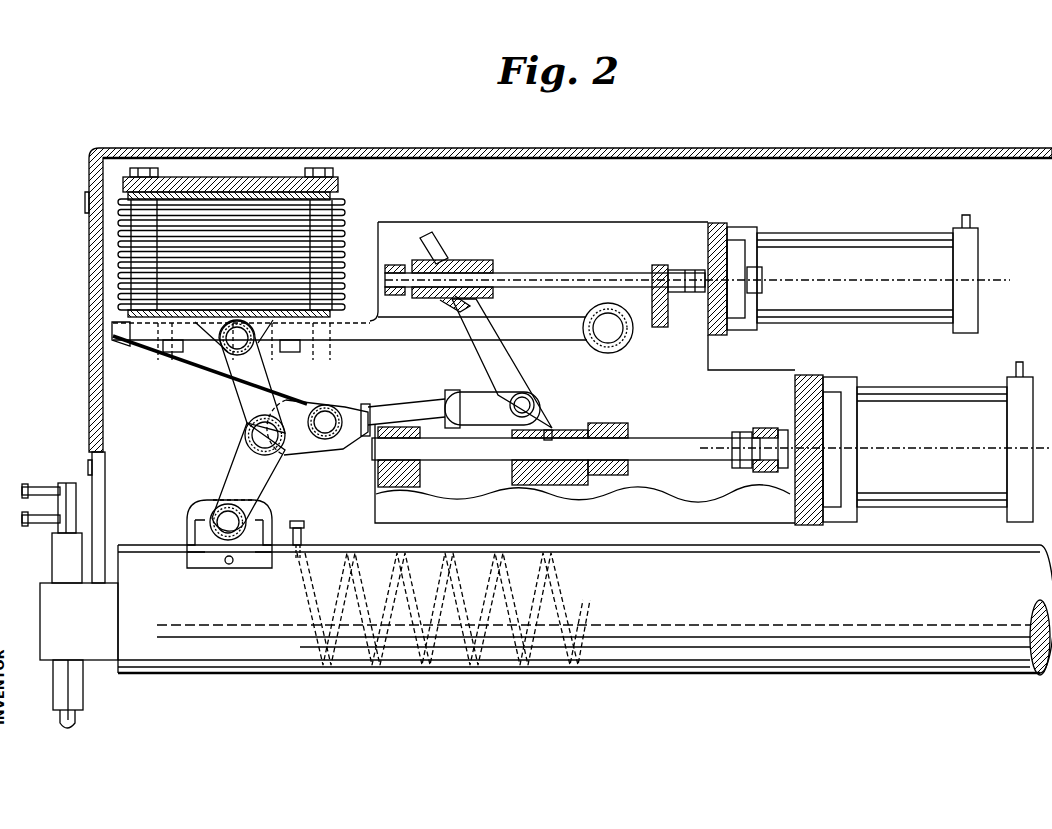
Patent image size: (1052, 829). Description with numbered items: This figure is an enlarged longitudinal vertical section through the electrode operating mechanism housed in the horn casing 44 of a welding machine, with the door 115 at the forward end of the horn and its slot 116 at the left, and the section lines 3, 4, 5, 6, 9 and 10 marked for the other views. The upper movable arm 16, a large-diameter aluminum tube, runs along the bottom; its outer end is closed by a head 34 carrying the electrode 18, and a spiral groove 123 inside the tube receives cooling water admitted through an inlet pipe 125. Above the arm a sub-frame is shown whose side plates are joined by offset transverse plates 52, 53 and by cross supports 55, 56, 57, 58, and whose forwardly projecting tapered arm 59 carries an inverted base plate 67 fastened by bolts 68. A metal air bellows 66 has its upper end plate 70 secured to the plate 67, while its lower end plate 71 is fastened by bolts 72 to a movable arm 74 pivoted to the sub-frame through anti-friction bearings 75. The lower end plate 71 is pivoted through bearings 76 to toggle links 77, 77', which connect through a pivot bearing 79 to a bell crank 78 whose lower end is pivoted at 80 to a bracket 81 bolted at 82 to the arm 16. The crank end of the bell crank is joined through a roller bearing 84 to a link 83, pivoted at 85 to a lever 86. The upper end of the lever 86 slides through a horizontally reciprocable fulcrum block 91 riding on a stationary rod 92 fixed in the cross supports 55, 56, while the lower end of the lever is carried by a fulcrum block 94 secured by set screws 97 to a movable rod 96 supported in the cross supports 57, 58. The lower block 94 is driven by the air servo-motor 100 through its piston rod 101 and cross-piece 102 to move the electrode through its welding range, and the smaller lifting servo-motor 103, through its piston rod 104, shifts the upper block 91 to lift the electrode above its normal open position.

The section line 3- 3 is at (80, 298).
The section line 4- 4 is at (355, 462).
The section line 5- 5 is at (548, 508).
The section line 6- 6 is at (173, 330).
The section line 9- 9 is at (453, 335).
The section line 10- 10 is at (228, 705).
The upper movable arm 16 is at (800, 675).
The electrode 18 is at (72, 700).
The head 34 is at (55, 600).
The horn casing 44 is at (676, 148).
The offset transverse plate 52 is at (718, 223).
The offset transverse plate 53 is at (812, 375).
The cross support 55 is at (660, 327).
The cross support 56 is at (392, 295).
The cross support 57 is at (422, 474).
The cross support 58 is at (630, 472).
The tapered arm 59 is at (200, 365).
The metal air bellows 66 is at (347, 222).
The inverted base plate 67 is at (283, 177).
The bolts 68 is at (148, 168).
The upper end plate 70 is at (222, 192).
The lower end plate 71 is at (128, 346).
The bolts 72 is at (183, 348).
The movable arm 74 is at (408, 340).
The anti-friction bearings 75 is at (618, 345).
The anti-friction bearings 76 is at (242, 352).
The toggle links 77 is at (262, 376).
The lever arm 77' is at (240, 477).
The bell crank 78 is at (290, 446).
The anti-friction pivot bearing 79 is at (247, 440).
The anti-friction bearing pivot 80 is at (243, 515).
The bracket 81 is at (200, 505).
The bolts 82 is at (225, 563).
The link 83 is at (392, 410).
The roller bearing 84 is at (336, 410).
The pivot 85 is at (525, 404).
The lever 86 is at (505, 375).
The fulcrum block 91 is at (495, 262).
The stationary horizontal rod 92 is at (530, 278).
The fulcrum block 94 is at (514, 474).
The horizontally movable rod 96 is at (642, 440).
The set screws 97 is at (553, 430).
The piston and cylinder servo-motor 100 is at (932, 408).
The piston rod 101 is at (760, 472).
The cross-piece 102 is at (765, 428).
The lifting servo-motor 103 is at (868, 250).
The piston rod 104 is at (690, 270).
The door 115 is at (95, 365).
The slot 116 is at (95, 495).
The spiral groove 123 is at (555, 590).
The inlet pipe 125 is at (305, 525).